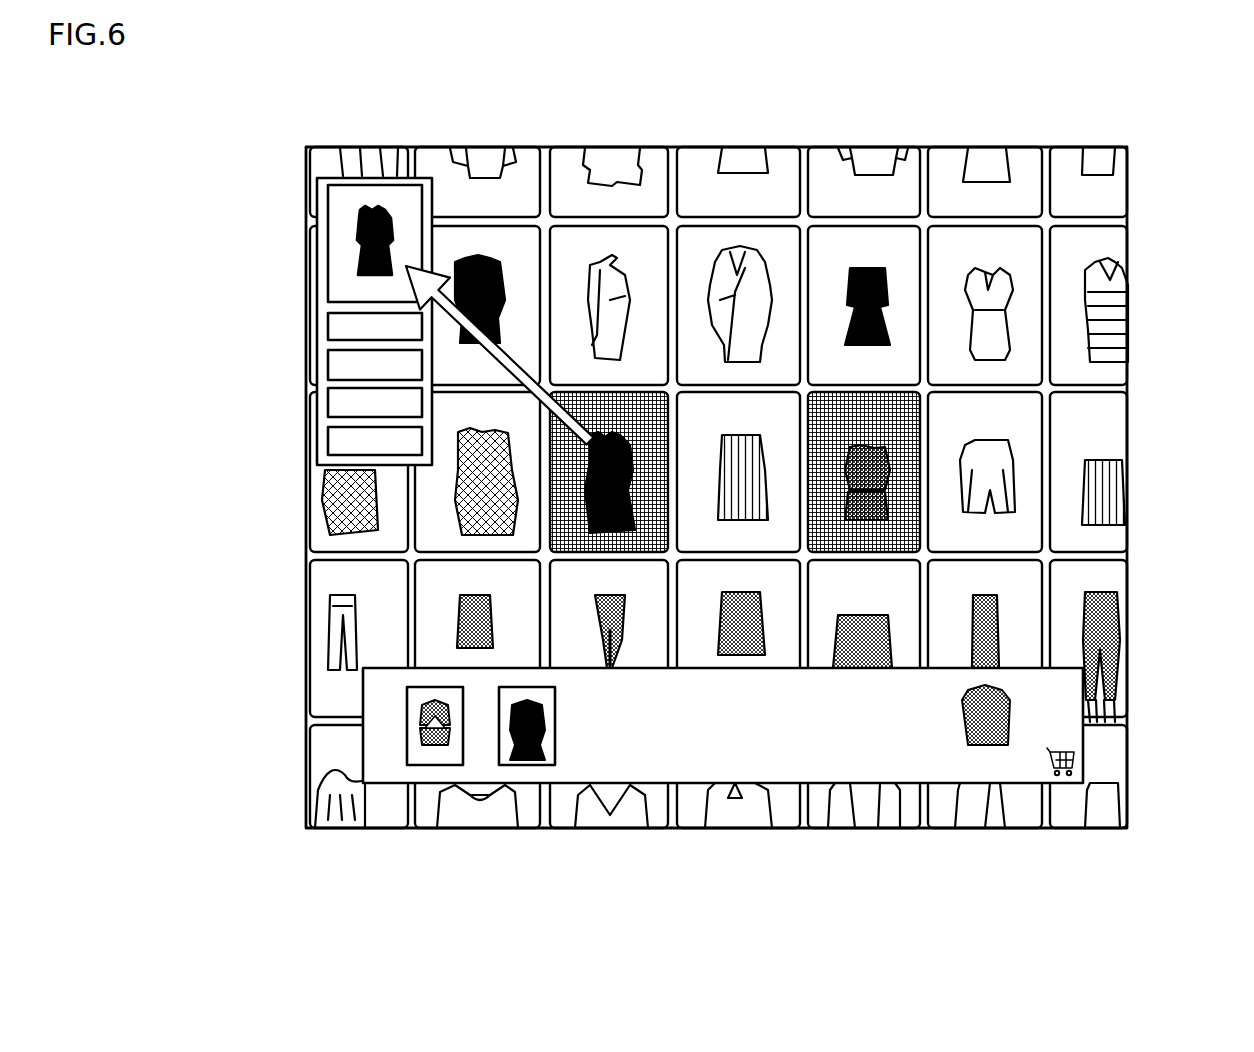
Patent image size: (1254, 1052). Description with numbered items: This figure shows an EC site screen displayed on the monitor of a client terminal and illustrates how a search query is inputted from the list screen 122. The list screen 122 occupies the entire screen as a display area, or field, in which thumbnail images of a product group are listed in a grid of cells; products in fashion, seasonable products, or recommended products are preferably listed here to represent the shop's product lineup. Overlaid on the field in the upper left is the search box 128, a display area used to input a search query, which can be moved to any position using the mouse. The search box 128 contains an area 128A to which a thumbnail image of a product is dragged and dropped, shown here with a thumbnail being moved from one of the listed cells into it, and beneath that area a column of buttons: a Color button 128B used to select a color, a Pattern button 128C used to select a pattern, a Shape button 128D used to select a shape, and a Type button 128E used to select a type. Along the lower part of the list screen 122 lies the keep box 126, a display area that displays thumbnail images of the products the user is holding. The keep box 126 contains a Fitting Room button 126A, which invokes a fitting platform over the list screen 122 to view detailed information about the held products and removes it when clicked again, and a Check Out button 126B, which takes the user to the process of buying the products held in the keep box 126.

The list screen 122 is at (781, 146).
The keep box 126 is at (782, 790).
The Fitting Room button 126A is at (1073, 718).
The Check Out button 126B is at (1080, 757).
The search box 128 is at (381, 172).
The area 128A is at (328, 240).
The Color button 128B is at (328, 326).
The Pattern button 128C is at (328, 365).
The Shape button 128D is at (328, 403).
The Type button 128E is at (328, 442).